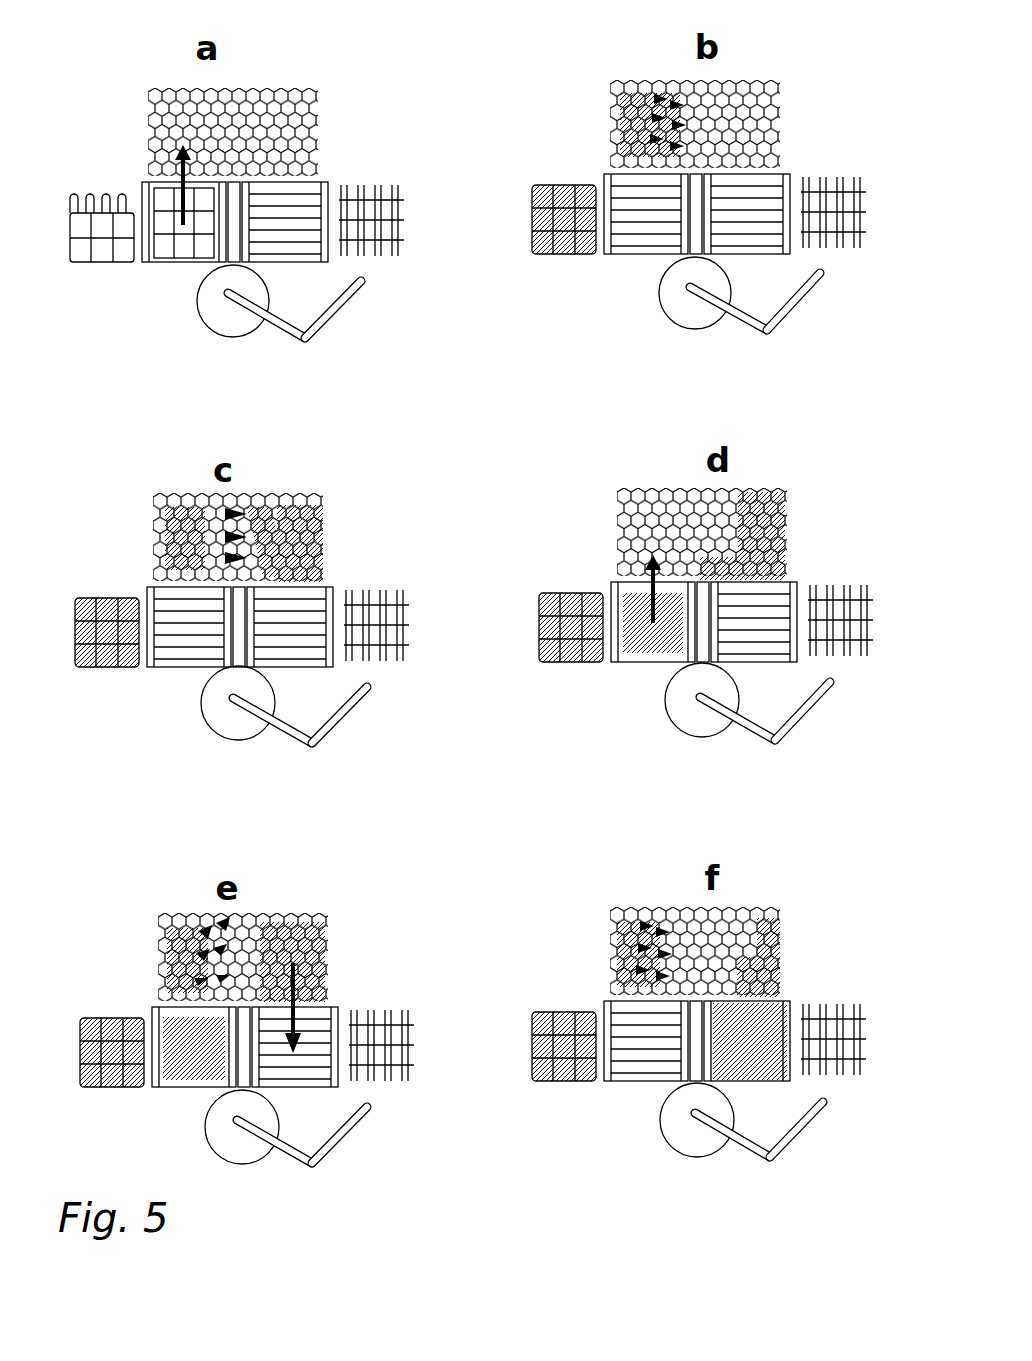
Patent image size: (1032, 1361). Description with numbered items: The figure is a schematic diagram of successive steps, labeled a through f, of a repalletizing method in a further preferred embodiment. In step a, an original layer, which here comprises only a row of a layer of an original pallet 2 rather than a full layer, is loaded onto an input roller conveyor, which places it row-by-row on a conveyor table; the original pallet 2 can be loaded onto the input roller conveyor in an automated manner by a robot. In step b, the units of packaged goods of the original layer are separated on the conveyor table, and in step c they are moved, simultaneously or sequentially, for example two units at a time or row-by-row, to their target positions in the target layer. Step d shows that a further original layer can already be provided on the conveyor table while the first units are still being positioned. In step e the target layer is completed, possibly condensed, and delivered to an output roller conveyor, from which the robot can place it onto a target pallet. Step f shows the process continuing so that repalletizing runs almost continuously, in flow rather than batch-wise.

The original pallet 2 is at (91, 161).